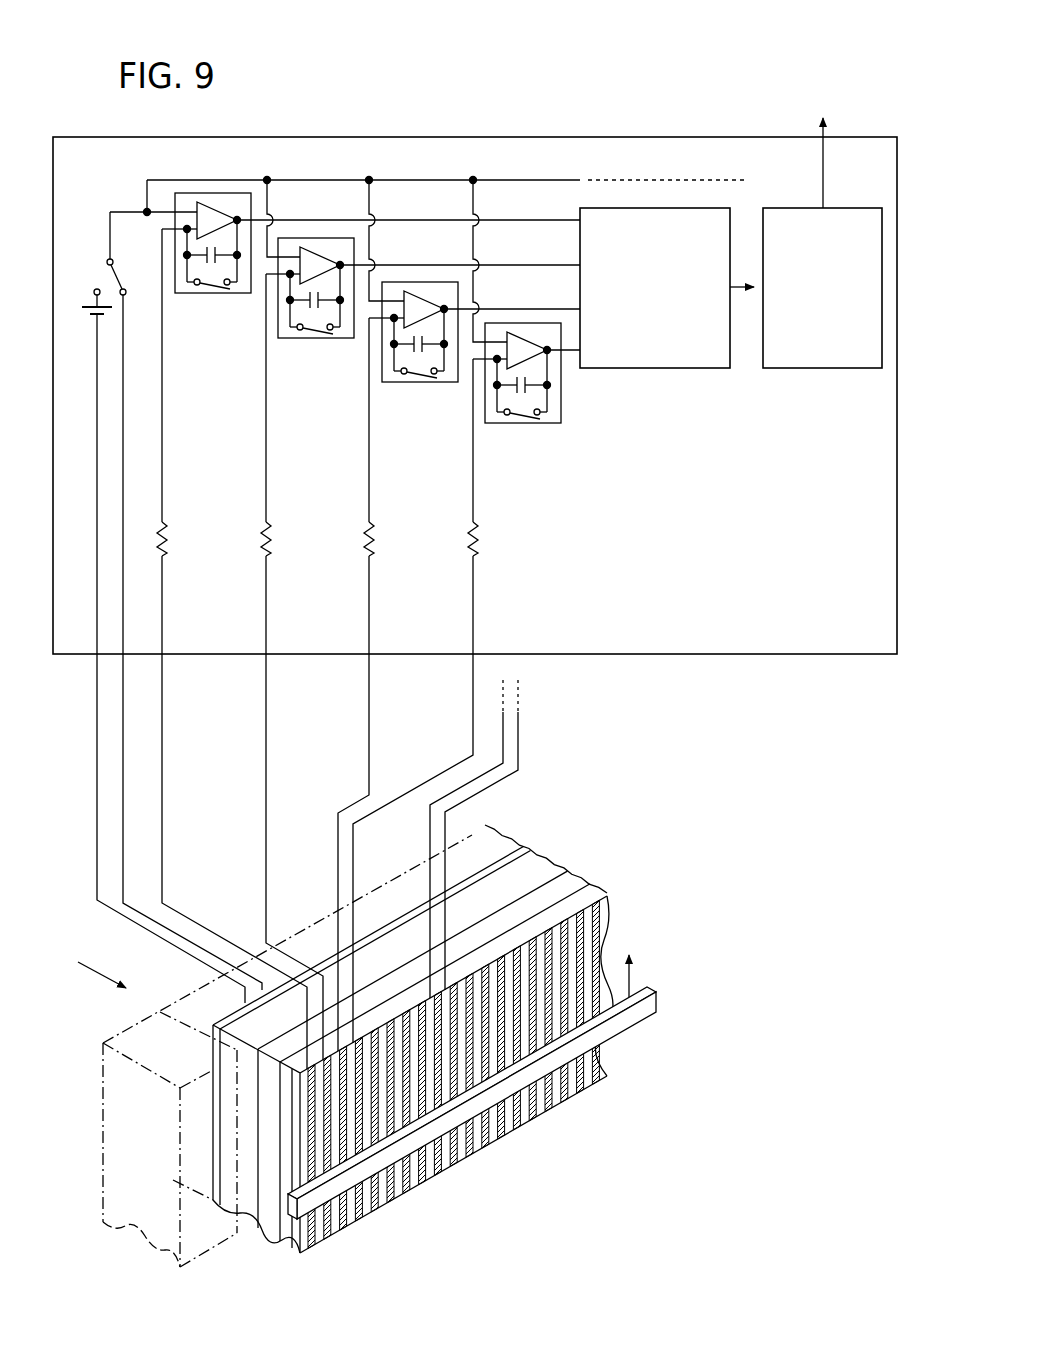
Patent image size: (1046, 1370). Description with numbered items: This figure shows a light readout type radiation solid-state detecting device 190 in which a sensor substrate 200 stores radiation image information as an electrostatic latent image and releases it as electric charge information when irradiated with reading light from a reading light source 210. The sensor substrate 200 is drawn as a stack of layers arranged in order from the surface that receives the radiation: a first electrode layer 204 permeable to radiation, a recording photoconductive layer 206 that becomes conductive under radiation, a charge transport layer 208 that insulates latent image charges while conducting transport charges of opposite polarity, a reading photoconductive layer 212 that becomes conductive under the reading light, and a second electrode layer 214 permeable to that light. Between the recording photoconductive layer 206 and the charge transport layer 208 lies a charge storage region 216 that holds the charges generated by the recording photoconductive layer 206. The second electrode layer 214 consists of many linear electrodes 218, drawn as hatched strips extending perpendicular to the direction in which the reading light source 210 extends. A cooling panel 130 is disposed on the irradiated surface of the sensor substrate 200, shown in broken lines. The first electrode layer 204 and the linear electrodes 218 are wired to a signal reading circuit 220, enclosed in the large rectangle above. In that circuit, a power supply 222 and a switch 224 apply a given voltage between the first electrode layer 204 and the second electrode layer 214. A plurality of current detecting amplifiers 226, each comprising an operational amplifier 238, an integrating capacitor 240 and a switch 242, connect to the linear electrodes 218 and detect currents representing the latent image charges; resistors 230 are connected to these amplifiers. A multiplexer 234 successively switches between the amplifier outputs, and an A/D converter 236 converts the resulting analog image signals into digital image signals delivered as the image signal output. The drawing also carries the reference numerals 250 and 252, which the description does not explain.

The light readout type radiation solid-state detecting device 190 is at (641, 82).
The signal reading circuit 220 is at (565, 137).
The operational amplifier 238 is at (219, 205).
The current detecting amplifier 226 is at (246, 193).
The switch 224 is at (104, 277).
The integrating capacitor 240 is at (203, 270).
The switch 242 is at (203, 285).
The power supply 222 is at (85, 308).
The resistor 230 is at (173, 548).
The multiplexer 234 is at (715, 369).
The A/D converter 236 is at (866, 369).
The center line 250 is at (325, 938).
The cooling panel 130 is at (96, 1060).
The leading edge of recording medium 252 is at (141, 1217).
The sensor substrate 200 is at (645, 915).
The first electrode layer 204 is at (519, 847).
The recording photoconductive layer 206 is at (541, 873).
The charge storage region 216 is at (512, 903).
The charge transport layer 208 is at (576, 885).
The reading photoconductive layer 212 is at (599, 888).
The second electrode layer 214 is at (607, 1062).
The linear electrode 218 is at (577, 1094).
The reading light source 210 is at (625, 1018).